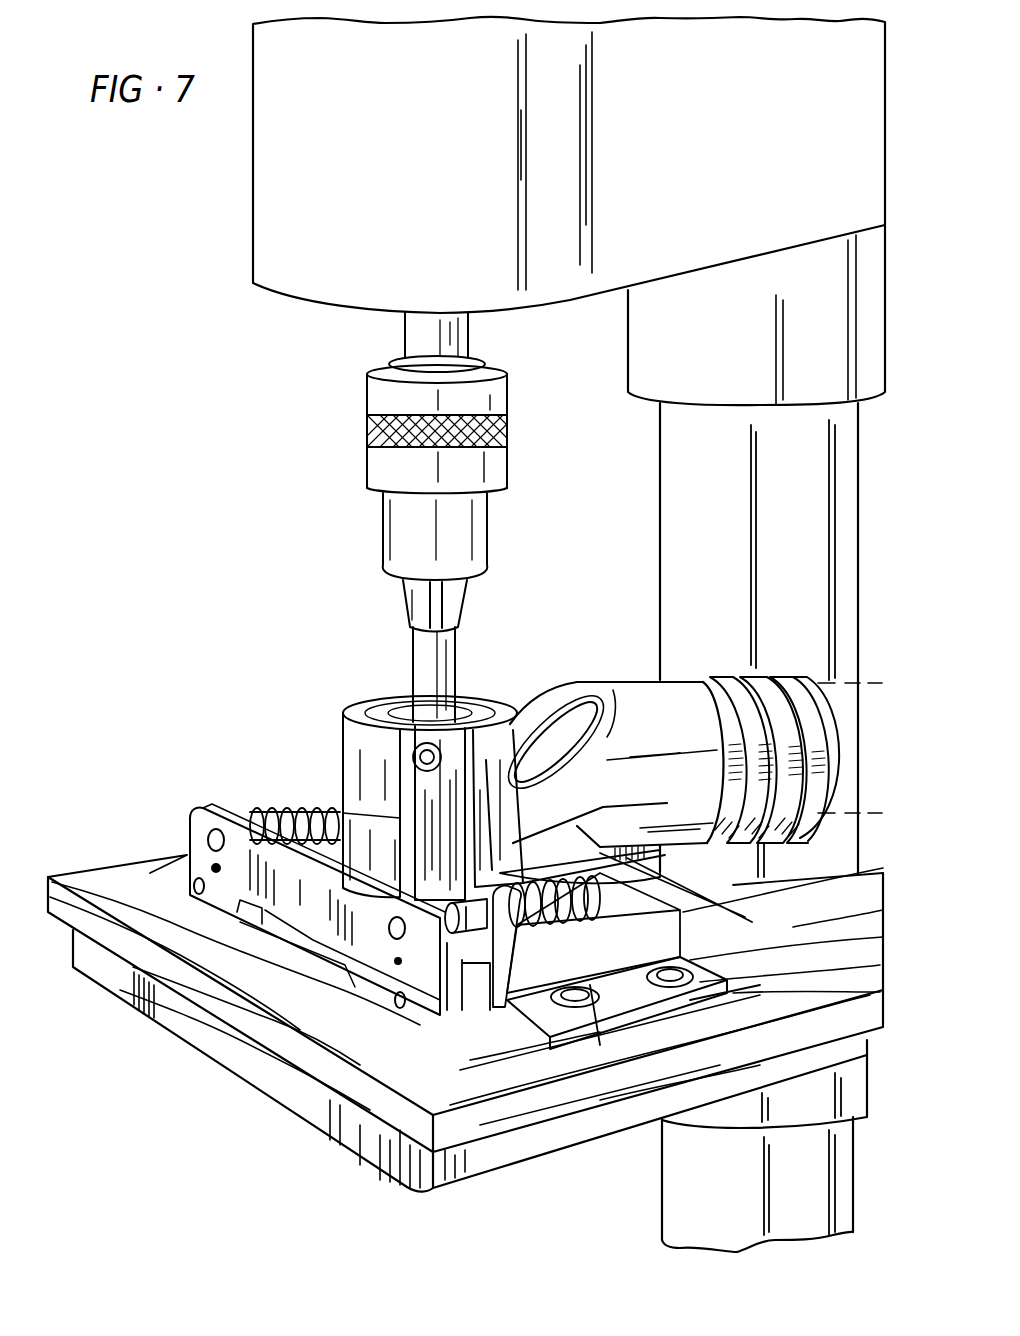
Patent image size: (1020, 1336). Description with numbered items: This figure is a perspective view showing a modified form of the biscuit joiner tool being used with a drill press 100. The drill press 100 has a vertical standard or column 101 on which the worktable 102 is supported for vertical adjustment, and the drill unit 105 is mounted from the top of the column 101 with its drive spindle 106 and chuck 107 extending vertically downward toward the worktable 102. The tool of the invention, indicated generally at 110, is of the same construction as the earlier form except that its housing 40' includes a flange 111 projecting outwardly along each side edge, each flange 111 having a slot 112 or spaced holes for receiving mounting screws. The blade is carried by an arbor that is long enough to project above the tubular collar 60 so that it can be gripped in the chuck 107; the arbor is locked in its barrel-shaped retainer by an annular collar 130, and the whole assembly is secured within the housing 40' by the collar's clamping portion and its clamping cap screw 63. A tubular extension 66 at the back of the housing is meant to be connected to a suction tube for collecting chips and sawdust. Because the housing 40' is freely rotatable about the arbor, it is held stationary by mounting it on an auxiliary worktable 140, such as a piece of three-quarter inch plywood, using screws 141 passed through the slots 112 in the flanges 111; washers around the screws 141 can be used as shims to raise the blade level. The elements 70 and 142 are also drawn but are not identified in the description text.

The drill unit 105 is at (392, 187).
The drive spindle 106 is at (468, 335).
The chuck 107 is at (497, 463).
The vertical standard or column 101 is at (672, 510).
The drill press 100 is at (352, 613).
The annular collar 130 is at (378, 704).
The tool of the invention 110 is at (318, 740).
The clamping cap screw 63 is at (413, 758).
The tubular collar 60 is at (535, 824).
The tubular extension 66 is at (640, 690).
The jaw plate 70 is at (198, 814).
The auxiliary worktable 140 is at (152, 872).
The bracket 142 is at (655, 862).
The housing 40' is at (741, 896).
The screws 141 is at (590, 1000).
The flange 111 is at (693, 992).
The slot 112 is at (617, 999).
The worktable 102 is at (494, 1153).